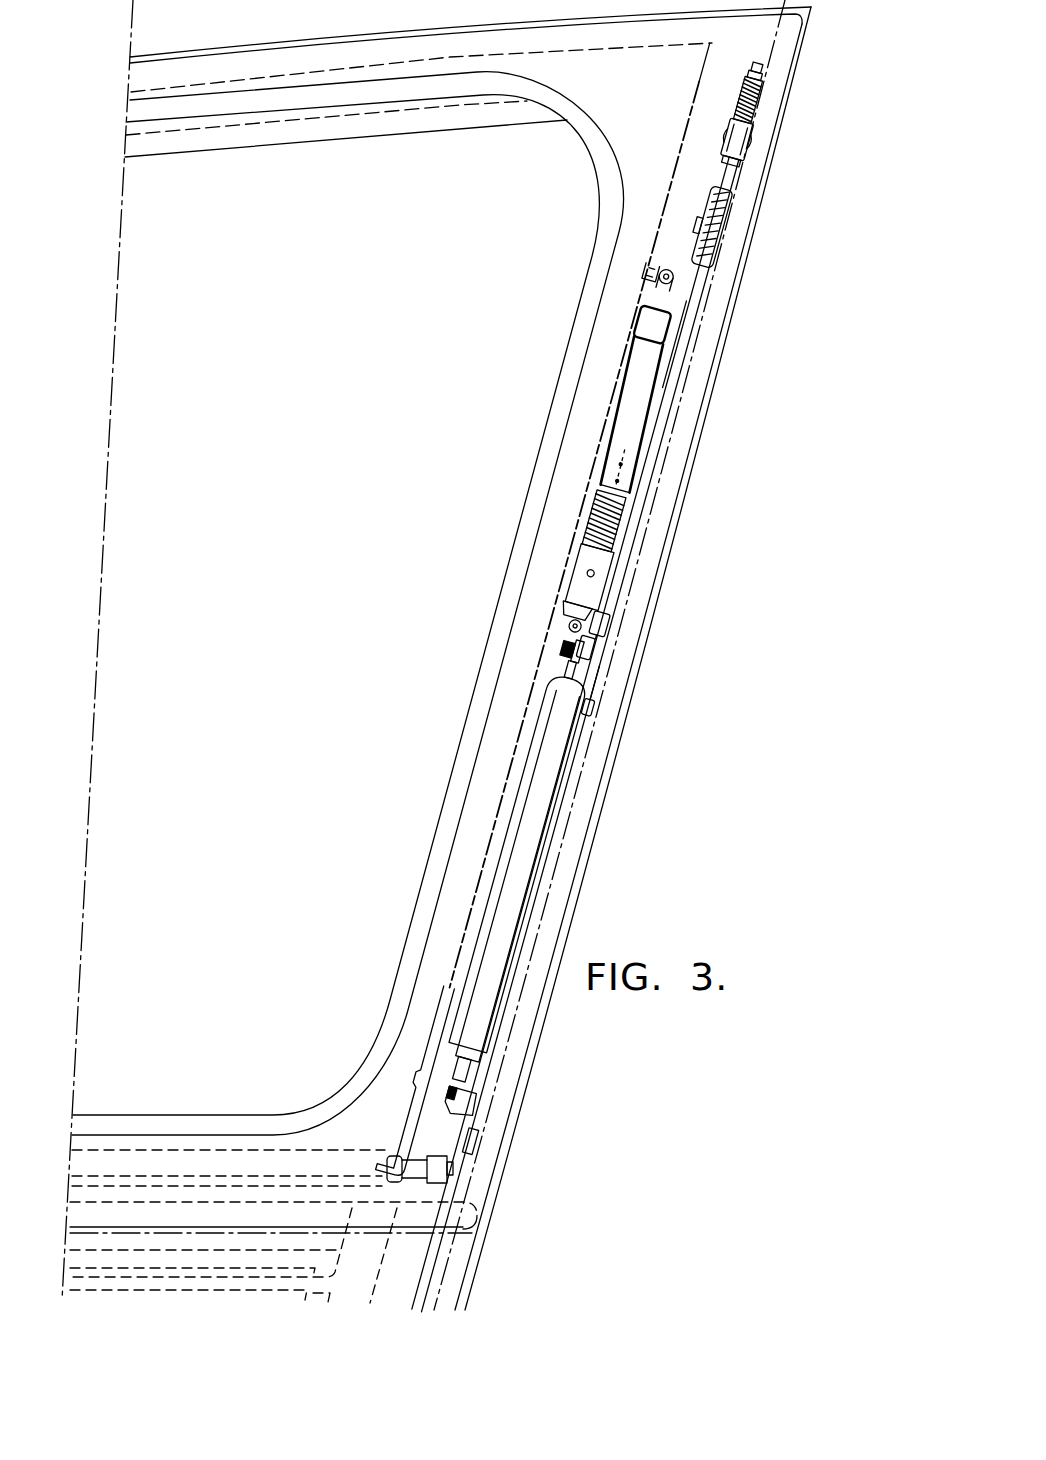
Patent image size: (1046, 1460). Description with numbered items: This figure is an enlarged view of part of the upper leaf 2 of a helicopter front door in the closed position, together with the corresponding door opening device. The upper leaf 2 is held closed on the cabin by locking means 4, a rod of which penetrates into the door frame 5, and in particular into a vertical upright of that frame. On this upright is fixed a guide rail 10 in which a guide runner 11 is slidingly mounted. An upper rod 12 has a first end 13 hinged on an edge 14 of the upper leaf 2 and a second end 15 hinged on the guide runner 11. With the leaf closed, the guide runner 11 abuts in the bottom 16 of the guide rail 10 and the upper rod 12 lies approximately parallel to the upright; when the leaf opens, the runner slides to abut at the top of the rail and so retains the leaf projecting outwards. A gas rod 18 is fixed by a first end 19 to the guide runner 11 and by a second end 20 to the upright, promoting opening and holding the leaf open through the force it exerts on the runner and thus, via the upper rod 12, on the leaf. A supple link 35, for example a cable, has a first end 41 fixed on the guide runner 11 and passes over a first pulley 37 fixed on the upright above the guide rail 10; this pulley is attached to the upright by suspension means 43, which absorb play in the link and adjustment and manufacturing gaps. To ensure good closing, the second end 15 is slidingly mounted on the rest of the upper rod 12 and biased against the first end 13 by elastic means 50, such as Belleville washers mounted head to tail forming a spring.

The upper leaf 2 is at (349, 437).
The locking means 4 is at (110, 1157).
The door frame 5 is at (454, 1263).
The guide rail 10 is at (657, 472).
The guide runner 11 is at (590, 660).
The upper rod 12 is at (645, 424).
The first end 13 is at (654, 306).
The edge 14 is at (652, 268).
The second end 15 is at (590, 626).
The bottom 16 is at (596, 705).
The gas rod 18 is at (530, 827).
The first end 19 is at (566, 664).
The second end 20 is at (466, 1088).
The supple link 35 is at (680, 352).
The first pulley 37 is at (722, 217).
The first end 41 is at (624, 580).
The suspension means 43 is at (748, 122).
The elastic means 50 is at (618, 536).